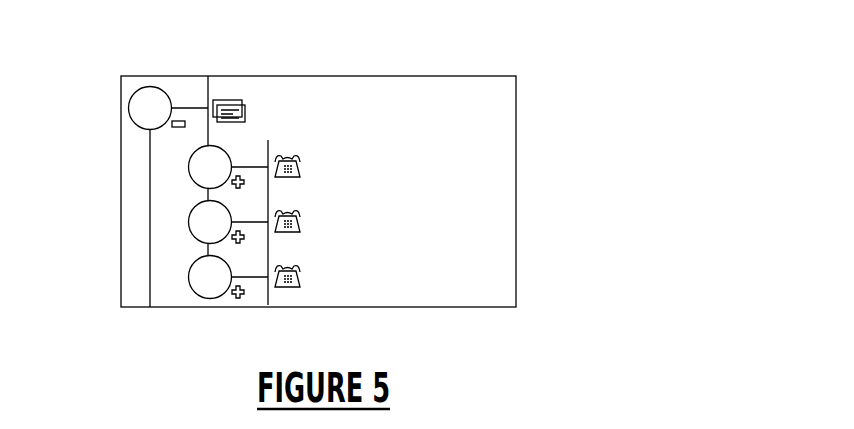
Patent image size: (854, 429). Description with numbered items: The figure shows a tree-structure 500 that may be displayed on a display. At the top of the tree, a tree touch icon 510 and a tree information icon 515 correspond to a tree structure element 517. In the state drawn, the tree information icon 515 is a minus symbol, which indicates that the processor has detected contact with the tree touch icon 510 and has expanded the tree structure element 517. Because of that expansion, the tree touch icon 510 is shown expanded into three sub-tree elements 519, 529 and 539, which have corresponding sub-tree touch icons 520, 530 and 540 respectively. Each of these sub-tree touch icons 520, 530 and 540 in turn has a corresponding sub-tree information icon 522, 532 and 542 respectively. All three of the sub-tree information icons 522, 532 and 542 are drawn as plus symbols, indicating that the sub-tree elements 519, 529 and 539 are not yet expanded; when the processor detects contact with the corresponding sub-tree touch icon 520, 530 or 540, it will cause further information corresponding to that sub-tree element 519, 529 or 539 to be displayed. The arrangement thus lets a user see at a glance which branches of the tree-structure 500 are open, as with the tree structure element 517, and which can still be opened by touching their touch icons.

The tree-structure 500 is at (452, 63).
The tree touch icon 510 is at (133, 121).
The tree information icon 515 is at (176, 128).
The tree structure element 517 is at (310, 120).
The sub-tree element 519 is at (340, 181).
The sub-tree touch icon 520 is at (195, 183).
The sub-tree information icon 522 is at (197, 204).
The sub-tree element 529 is at (328, 235).
The sub-tree touch icon 530 is at (196, 237).
The sub-tree information icon 532 is at (196, 261).
The sub-tree element 539 is at (323, 293).
The sub-tree touch icon 540 is at (192, 296).
The sub-tree information icon 542 is at (243, 299).